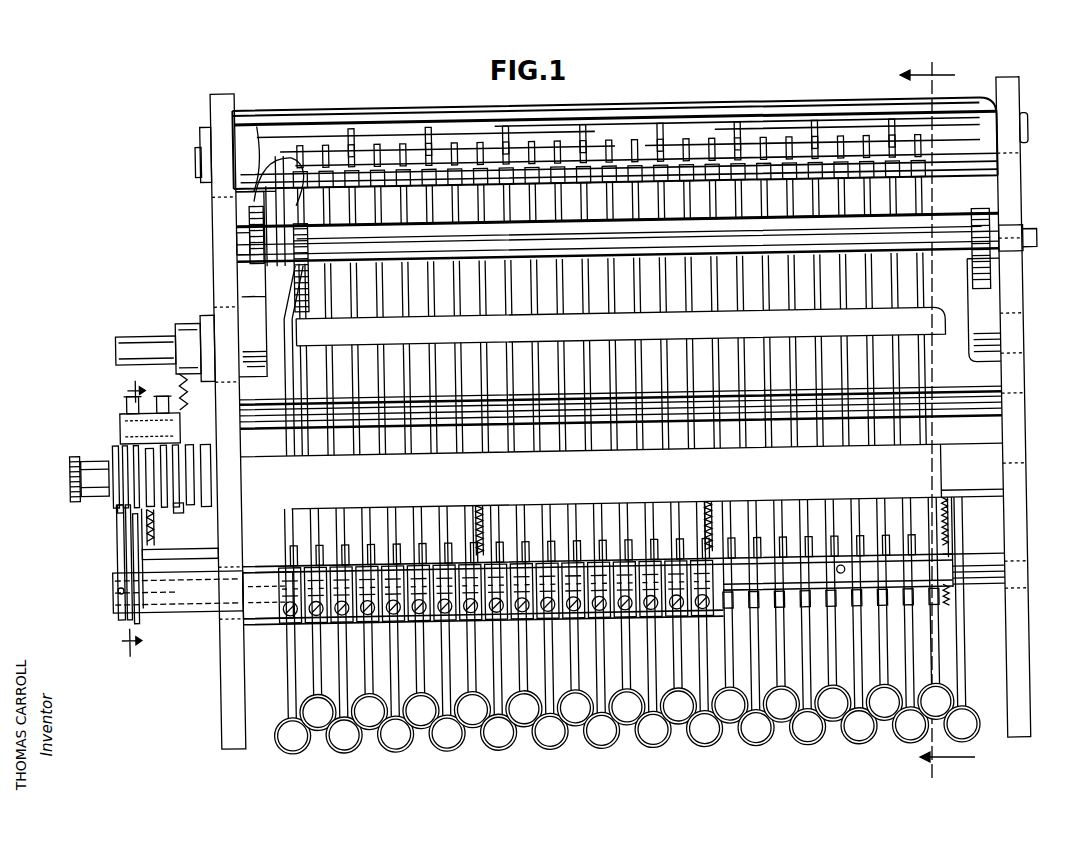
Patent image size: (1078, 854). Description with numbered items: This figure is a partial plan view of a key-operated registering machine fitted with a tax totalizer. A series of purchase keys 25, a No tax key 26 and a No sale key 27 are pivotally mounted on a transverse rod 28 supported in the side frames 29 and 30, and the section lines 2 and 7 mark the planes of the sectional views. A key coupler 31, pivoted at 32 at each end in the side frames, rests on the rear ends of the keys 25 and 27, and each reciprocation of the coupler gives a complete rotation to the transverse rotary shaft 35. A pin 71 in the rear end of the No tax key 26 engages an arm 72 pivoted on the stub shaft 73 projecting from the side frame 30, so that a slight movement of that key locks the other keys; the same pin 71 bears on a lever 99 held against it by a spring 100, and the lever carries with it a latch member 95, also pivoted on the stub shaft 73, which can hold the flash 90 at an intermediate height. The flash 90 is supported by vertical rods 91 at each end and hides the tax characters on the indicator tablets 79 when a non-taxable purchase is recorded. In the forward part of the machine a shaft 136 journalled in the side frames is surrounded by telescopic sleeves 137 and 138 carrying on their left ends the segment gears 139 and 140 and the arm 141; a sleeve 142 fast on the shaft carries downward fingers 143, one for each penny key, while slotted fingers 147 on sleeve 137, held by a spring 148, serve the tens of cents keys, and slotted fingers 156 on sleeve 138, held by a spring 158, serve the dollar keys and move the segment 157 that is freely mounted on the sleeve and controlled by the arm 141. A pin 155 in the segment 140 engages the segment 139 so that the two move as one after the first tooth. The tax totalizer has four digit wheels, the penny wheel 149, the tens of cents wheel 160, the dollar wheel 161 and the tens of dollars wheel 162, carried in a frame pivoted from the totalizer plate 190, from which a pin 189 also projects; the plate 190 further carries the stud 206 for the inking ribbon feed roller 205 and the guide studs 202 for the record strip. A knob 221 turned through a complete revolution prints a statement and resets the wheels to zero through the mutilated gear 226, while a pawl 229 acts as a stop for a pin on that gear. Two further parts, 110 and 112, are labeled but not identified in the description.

The section line 2- 2 is at (937, 416).
The section line 7- 7 is at (154, 516).
The purchase keys 25 is at (778, 768).
The No tax key 26 is at (280, 746).
The No sale key 27 is at (970, 745).
The transverse rod 28 is at (968, 413).
The right hand side frame 29 is at (1025, 538).
The left hand side frame 30 is at (216, 672).
The key coupler 31 is at (857, 300).
The pivot 32 is at (1030, 350).
The transverse rotary shaft 35 is at (380, 255).
The pin 71 is at (258, 168).
The arm 72 is at (270, 135).
The stub shaft 73 is at (252, 226).
The indicator tablet 79 is at (810, 140).
The flash 90 is at (351, 112).
The vertical rods 91 is at (1044, 156).
The latch member 95 is at (204, 140).
The lever 99 is at (240, 128).
The spring 100 is at (296, 250).
The plate 110 is at (112, 445).
The frame member 112 is at (990, 480).
The shaft 136 is at (978, 590).
The telescopic sleeve 137 is at (622, 565).
The telescopic sleeve 138 is at (272, 612).
The penny segment gear 139 is at (115, 522).
The tens of cents segment gear 140 is at (124, 535).
The arm 141 is at (130, 548).
The sleeve 142 is at (844, 503).
The fingers 143 is at (935, 612).
The slotted fingers 147 is at (700, 510).
The spring 148 is at (712, 503).
The penny wheel 149 is at (135, 430).
The pin 155 is at (115, 503).
The slotted fingers 156 is at (460, 530).
The segment 157 is at (140, 503).
The spring 158 is at (478, 503).
The tens of cents wheel 160 is at (160, 432).
The dollar wheel 161 is at (142, 432).
The tens of dollars wheel 162 is at (186, 495).
The pin 189 is at (168, 545).
The Tax totalizer plate 190 is at (214, 527).
The guide studs 202 is at (82, 465).
The feed roller 205 is at (145, 328).
The stud 206 is at (115, 342).
The knob 221 is at (68, 482).
The gear 226 is at (122, 450).
The pawl 229 is at (132, 462).